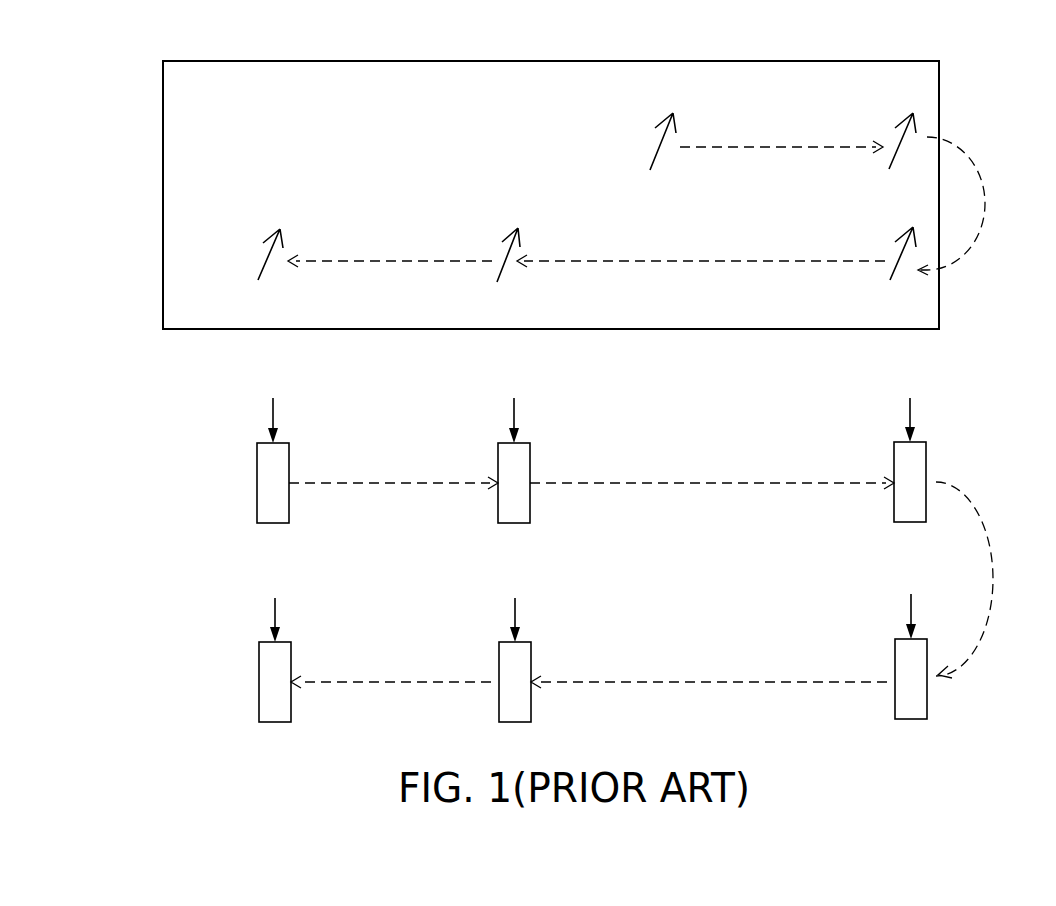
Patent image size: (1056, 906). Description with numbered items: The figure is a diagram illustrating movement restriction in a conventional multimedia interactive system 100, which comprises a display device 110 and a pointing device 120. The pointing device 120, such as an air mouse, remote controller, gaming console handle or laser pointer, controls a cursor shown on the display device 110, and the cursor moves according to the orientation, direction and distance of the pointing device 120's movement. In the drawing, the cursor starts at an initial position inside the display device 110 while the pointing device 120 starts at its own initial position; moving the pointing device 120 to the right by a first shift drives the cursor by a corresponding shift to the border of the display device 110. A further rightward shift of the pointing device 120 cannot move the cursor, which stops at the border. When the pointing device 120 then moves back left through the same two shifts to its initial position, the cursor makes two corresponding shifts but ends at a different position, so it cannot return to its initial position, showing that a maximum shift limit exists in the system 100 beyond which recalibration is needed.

The multimedia interactive system 100 is at (1004, 70).
The display device 110 is at (939, 300).
The pointing device 120 is at (272, 523).